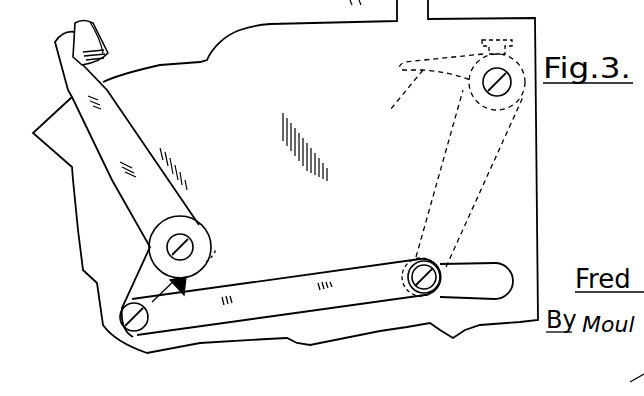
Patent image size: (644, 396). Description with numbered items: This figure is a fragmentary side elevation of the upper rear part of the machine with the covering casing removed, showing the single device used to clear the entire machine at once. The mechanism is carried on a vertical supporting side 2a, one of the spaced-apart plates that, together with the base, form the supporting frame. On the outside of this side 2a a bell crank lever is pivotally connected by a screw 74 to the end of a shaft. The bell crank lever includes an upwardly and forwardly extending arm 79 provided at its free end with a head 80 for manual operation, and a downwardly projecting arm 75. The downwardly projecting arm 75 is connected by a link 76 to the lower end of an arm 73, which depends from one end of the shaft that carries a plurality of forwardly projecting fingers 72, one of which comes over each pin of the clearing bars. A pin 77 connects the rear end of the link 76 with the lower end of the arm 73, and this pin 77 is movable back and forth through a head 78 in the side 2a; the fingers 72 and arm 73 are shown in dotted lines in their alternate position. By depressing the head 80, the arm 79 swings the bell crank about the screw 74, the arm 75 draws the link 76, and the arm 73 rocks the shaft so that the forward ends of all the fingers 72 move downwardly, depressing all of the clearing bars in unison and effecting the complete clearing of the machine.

The supporting side plate 2a is at (420, 163).
The head 80 is at (97, 35).
The upwardly and forwardly extending arm 79 is at (125, 173).
The screw 74 is at (193, 245).
The downwardly projecting arm 75 is at (143, 280).
The link 76 is at (280, 302).
The pin 77 is at (423, 288).
The head 78 is at (460, 293).
The arm 73 is at (443, 265).
The forwardly projecting fingers 72 is at (428, 96).